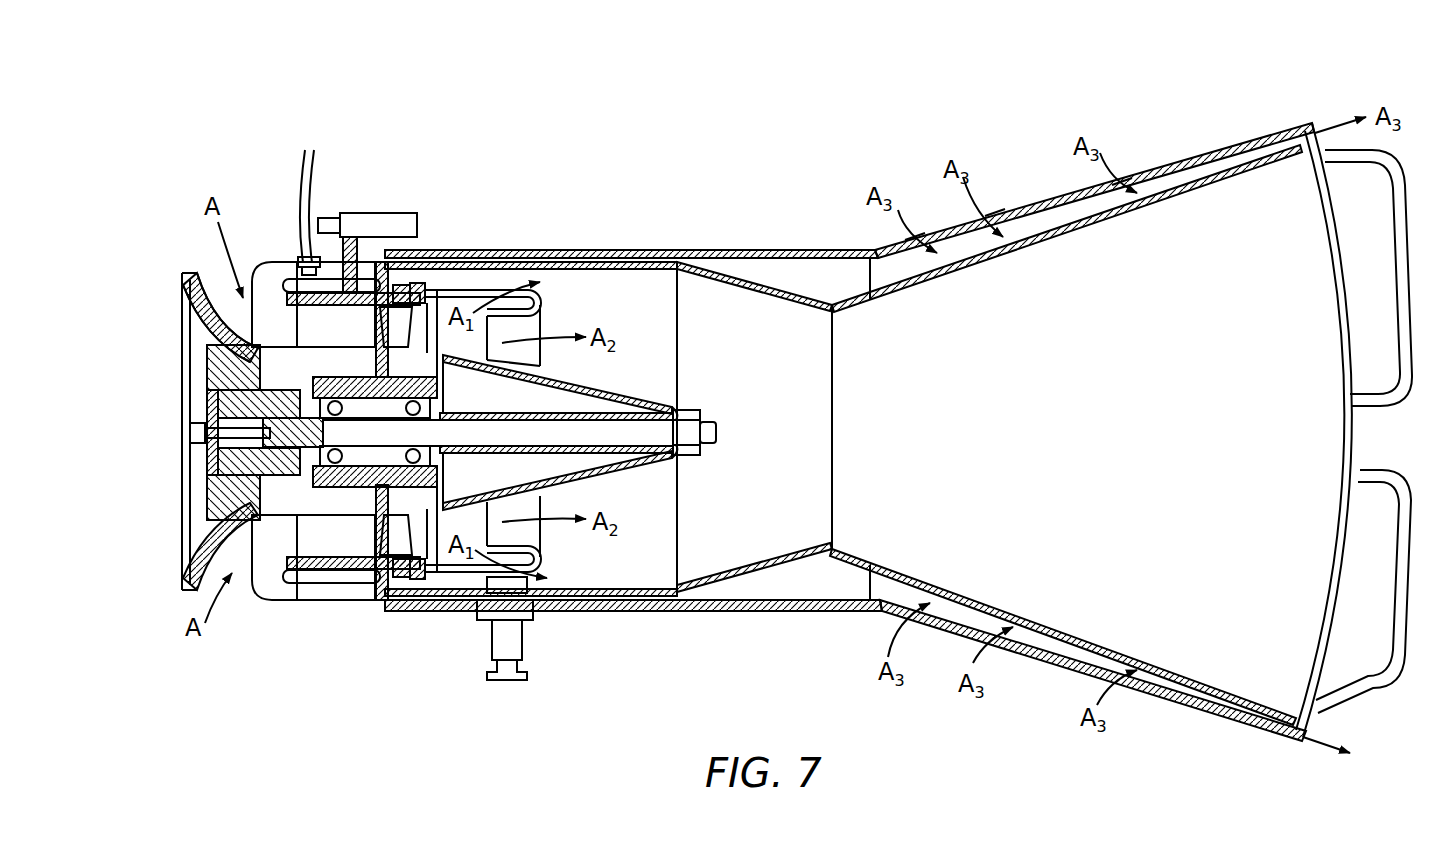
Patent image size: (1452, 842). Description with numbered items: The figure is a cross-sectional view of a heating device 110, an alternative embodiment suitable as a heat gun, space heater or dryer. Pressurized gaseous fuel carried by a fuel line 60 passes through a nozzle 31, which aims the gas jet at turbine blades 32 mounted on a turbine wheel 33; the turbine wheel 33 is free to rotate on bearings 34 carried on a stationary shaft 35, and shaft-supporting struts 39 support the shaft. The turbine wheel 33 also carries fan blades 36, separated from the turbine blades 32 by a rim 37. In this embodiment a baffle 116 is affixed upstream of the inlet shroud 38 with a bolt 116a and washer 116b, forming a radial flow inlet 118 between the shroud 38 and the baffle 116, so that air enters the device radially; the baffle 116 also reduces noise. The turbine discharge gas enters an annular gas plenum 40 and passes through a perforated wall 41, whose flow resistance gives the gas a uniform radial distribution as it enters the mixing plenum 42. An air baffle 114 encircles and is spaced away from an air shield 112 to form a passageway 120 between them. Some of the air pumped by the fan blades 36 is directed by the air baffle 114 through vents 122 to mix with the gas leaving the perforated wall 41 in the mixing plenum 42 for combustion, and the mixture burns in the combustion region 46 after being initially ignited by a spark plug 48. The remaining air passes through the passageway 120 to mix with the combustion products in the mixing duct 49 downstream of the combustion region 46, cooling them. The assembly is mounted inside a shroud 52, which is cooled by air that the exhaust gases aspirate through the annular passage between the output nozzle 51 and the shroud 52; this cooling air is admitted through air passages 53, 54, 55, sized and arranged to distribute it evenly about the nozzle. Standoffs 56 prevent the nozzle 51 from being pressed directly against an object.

The heating device 110 is at (816, 116).
The fuel line 60 is at (298, 178).
The turbine blades 32 is at (397, 258).
The rim 37 is at (408, 286).
The annular gas plenum 40 is at (447, 288).
The perforated wall 41 is at (480, 312).
The mixing plenum 42 is at (524, 263).
The combustion region 46 is at (645, 305).
The radial flow inlet 118 is at (213, 272).
The nozzle 31 is at (283, 264).
The baffle 116 is at (192, 342).
The fan blades 36 is at (400, 332).
The bolt 116a is at (190, 434).
The washer 116b is at (205, 497).
The turbine wheel 33 is at (345, 490).
The inlet shroud 38 is at (250, 575).
The shaft-supporting struts 39 is at (342, 545).
The bearings 34 is at (430, 440).
The stationary shaft 35 is at (568, 437).
The spark plug 48 is at (522, 646).
The air baffle 114 is at (541, 548).
The vents 122 is at (541, 298).
The air shield 112 is at (598, 380).
The passageway 120 is at (522, 362).
The mixing duct 49 is at (772, 521).
The air passage 53 is at (915, 235).
The air passage 54 is at (995, 212).
The air passage 55 is at (1122, 182).
The shroud 52 is at (1197, 153).
The output nozzle 51 is at (1172, 196).
The standoffs 56 is at (1405, 262).